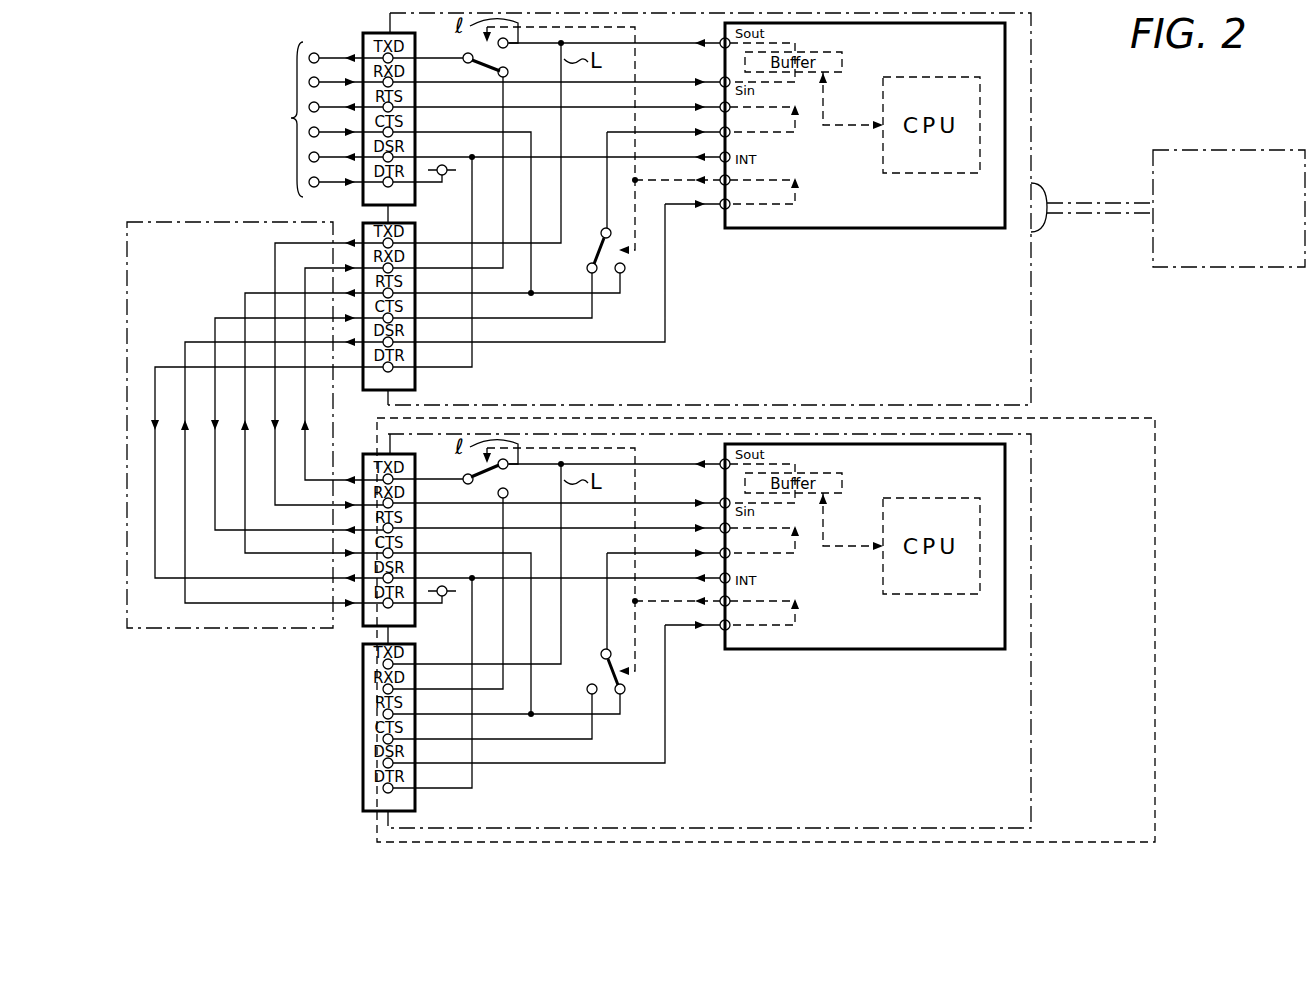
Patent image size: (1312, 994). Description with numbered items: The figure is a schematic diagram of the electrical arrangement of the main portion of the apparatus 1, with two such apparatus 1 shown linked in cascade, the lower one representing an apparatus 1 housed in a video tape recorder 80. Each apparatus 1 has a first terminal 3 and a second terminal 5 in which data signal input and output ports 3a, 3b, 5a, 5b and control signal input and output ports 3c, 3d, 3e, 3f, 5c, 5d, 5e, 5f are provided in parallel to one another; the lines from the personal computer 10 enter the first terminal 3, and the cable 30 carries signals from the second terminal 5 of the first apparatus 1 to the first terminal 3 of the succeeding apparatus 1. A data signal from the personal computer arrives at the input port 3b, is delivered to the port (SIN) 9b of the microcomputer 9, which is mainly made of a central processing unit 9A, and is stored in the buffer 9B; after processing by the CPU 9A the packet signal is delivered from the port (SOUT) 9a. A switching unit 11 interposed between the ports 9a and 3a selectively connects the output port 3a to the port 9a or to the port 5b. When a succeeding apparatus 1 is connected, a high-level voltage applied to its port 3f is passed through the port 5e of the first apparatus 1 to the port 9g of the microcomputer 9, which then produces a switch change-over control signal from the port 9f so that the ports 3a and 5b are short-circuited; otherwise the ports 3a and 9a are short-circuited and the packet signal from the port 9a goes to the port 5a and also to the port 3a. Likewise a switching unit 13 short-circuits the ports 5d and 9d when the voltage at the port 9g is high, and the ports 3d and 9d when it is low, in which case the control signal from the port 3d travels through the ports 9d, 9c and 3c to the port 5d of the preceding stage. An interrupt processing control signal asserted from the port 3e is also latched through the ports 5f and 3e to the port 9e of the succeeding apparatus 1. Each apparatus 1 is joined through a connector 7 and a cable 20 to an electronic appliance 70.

The apparatus 1 is at (753, 420).
The first terminal 3 is at (363, 33).
The output port 3a is at (383, 60).
The input port 3b is at (383, 84).
The control signal port 3c is at (383, 109).
The control signal input port 3d is at (383, 134).
The control signal port 3e is at (383, 159).
The control signal port 3f is at (393, 185).
The second terminal 5 is at (363, 223).
The data signal port 5a is at (393, 246).
The data signal port 5b is at (393, 271).
The control signal port 5c is at (393, 296).
The control signal port 5d is at (393, 321).
The control signal port 5e is at (393, 345).
The control signal port 5f is at (393, 370).
The appliance connector 7 is at (1040, 185).
The microcomputer 9 is at (865, 362).
The central processing unit 9A is at (931, 358).
The buffer 9B is at (821, 273).
The port (SOUT) 9a is at (721, 47).
The port (SIN) 9b is at (721, 86).
The port 9c is at (721, 111).
The port 9d is at (721, 136).
The port 9e is at (721, 161).
The port 9f is at (721, 184).
The port 9g is at (721, 208).
The personal computer connection lines 10 is at (260, 66).
The switching unit 11 is at (513, 268).
The switching unit 13 is at (595, 457).
The cable 20 is at (1105, 201).
The cable 30 is at (164, 222).
The electronic appliance 70 is at (1230, 150).
The video tape recorder 80 is at (1155, 520).